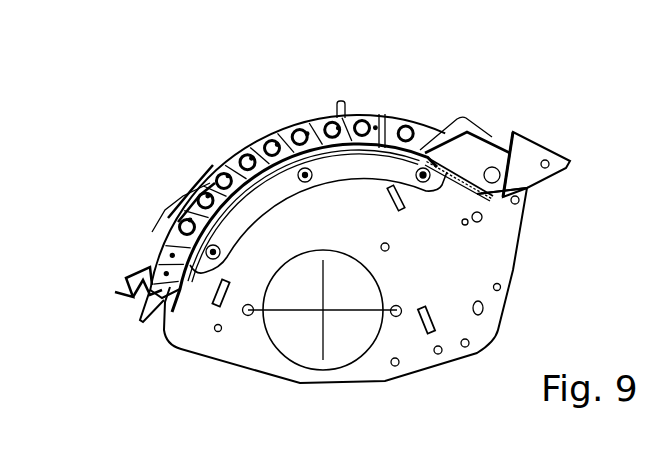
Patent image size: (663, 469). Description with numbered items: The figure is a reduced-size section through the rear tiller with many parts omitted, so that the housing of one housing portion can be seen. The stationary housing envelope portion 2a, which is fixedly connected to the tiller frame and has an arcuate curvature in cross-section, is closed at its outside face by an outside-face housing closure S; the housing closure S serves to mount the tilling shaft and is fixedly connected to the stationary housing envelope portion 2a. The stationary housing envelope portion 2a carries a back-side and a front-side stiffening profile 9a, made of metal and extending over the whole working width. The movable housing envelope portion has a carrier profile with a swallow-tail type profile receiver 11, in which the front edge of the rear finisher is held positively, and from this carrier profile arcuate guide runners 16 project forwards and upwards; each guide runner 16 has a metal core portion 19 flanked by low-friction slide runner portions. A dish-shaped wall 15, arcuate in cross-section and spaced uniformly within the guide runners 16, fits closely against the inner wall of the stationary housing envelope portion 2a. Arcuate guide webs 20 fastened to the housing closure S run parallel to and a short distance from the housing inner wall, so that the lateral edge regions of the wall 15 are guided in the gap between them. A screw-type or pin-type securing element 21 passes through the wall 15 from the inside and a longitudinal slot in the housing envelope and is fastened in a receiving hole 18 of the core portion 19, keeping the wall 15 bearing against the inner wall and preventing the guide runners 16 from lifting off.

The swallow-tail type profile receiver 11 is at (125, 277).
The stiffening profile 9a is at (487, 130).
The guide runner 16 is at (260, 139).
The core portion 19 is at (353, 112).
The receiving hole 18 is at (385, 113).
The stationary housing envelope portion 2a is at (428, 126).
The securing element 21 is at (379, 153).
The guide web 20 is at (411, 222).
The wall 15 is at (473, 206).
The outside-face housing closure S is at (483, 268).